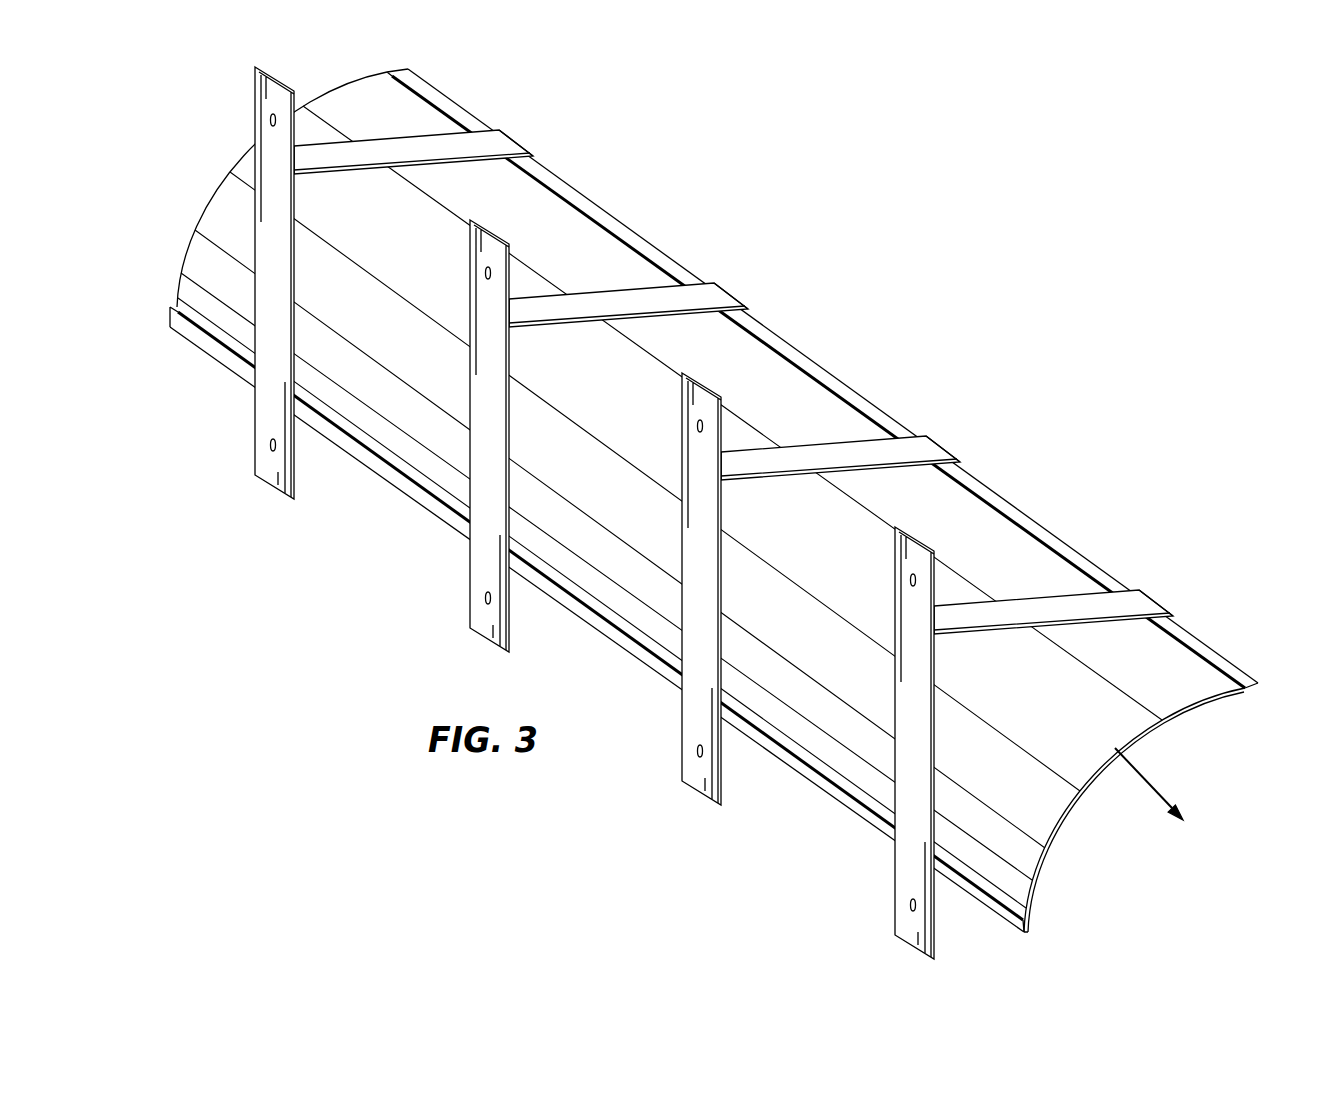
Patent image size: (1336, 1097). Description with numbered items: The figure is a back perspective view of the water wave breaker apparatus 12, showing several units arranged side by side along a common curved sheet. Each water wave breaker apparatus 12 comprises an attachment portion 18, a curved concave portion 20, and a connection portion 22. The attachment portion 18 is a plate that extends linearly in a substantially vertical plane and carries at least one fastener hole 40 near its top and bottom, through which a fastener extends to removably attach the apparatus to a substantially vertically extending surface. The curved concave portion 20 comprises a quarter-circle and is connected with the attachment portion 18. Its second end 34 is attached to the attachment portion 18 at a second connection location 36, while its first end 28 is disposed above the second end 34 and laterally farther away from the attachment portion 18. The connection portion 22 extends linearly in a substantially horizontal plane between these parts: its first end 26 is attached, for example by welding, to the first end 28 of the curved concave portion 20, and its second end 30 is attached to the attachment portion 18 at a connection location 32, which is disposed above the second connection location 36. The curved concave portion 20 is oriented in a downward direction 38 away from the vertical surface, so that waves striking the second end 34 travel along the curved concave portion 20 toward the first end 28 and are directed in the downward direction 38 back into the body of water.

The water wave breaker apparatus 12 is at (848, 322).
The attachment portion 18 is at (275, 77).
The curved concave portion 20 is at (1077, 790).
The connection portion 22 is at (420, 149).
The first end of the connection portion 26 is at (517, 149).
The first end of the curved concave portion 28 is at (1250, 692).
The second end of the connection portion 30 is at (300, 162).
The connection location 32 is at (295, 170).
The second end of the curved concave portion 34 is at (1030, 924).
The second connection location 36 is at (253, 387).
The downward direction 38 is at (1162, 790).
The fastener hole 40 is at (270, 120).